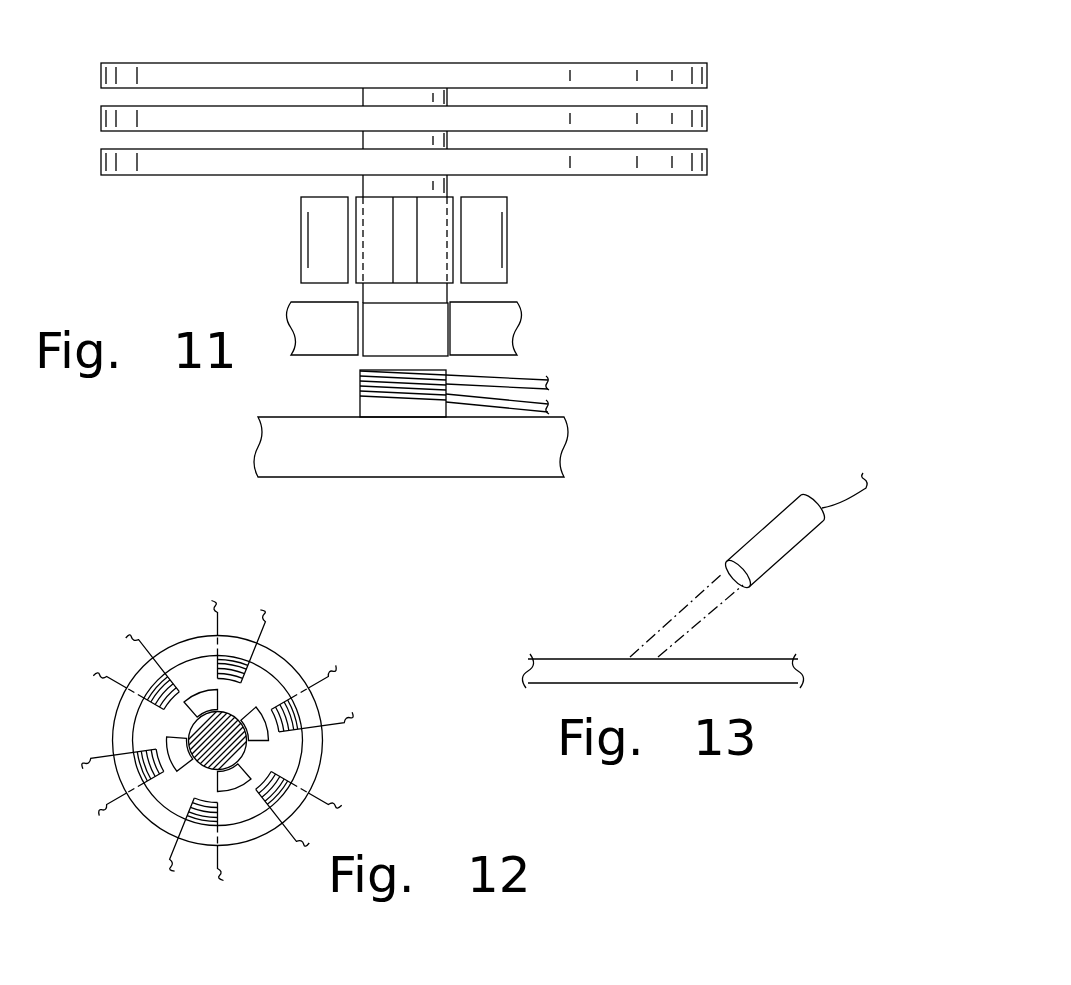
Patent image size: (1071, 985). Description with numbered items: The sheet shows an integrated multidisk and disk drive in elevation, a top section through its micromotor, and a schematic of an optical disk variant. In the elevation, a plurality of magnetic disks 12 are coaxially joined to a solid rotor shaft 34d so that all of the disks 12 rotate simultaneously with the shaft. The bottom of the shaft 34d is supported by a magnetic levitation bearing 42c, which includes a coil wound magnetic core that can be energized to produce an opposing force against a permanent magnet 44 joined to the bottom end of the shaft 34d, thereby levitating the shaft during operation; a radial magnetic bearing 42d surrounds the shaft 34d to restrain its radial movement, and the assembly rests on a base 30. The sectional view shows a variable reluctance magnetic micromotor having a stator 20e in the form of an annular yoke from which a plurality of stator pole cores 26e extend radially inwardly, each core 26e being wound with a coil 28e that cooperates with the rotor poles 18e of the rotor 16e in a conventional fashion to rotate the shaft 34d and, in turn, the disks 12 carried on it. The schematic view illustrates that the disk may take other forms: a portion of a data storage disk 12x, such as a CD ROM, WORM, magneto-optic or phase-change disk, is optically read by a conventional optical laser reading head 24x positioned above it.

In FIG. 11, the magnetic disks 12 is at (707, 75).
In FIG. 11, the rotor shaft 34d is at (448, 100).
In FIG. 11, the permanent magnet 44 is at (388, 343).
In FIG. 11, the radial magnetic bearing 42d is at (450, 324).
In FIG. 11, the magnetic levitation bearing 42c is at (359, 383).
In FIG. 11, the base 30 is at (421, 461).
In FIG. 12, the stator pole 16e is at (252, 710).
In FIG. 12, the rotor poles 18e is at (154, 741).
In FIG. 12, the stator 20e is at (261, 741).
In FIG. 12, the coil 28e is at (217, 741).
In FIG. 12, the stator pole cores 26e is at (244, 833).
In FIG. 13, the optical laser reading head 24x is at (767, 528).
In FIG. 13, the data storage disk 12x is at (578, 658).